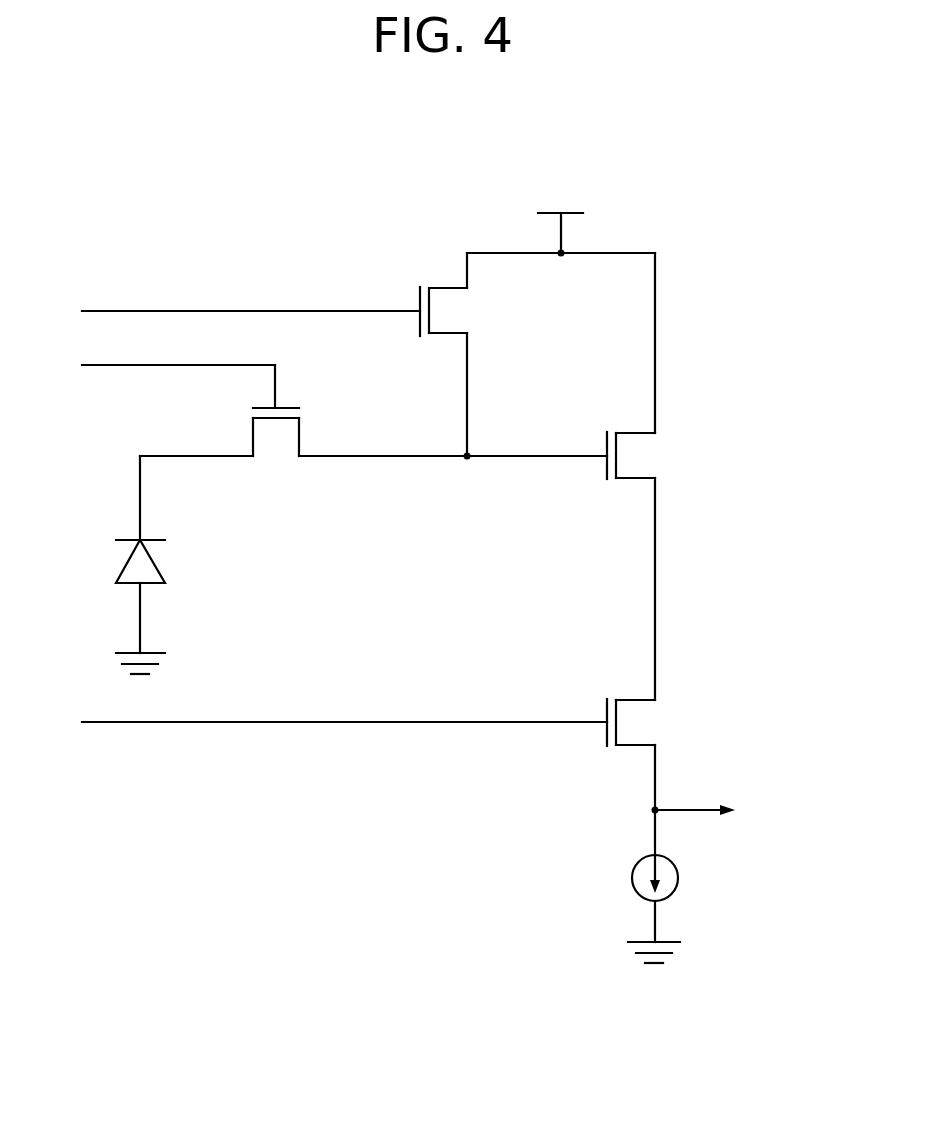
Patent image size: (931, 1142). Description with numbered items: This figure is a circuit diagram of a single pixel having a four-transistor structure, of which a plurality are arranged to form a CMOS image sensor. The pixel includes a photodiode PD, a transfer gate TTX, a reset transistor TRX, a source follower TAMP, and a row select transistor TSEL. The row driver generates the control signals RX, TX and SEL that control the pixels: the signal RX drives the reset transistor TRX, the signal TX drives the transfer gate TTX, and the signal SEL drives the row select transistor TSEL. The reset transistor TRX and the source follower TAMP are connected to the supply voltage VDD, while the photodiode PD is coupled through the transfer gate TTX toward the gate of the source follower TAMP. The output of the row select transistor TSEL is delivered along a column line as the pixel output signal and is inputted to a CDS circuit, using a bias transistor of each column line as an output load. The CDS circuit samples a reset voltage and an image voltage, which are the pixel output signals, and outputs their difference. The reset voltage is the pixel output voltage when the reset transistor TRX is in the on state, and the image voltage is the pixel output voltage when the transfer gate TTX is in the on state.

The supply voltage VDD is at (560, 220).
The control signal RX is at (234, 312).
The control signal TX is at (161, 380).
The reset transistor TRX is at (462, 354).
The transfer gate TTX is at (373, 446).
The photodiode PD is at (158, 565).
The source follower TAMP is at (658, 566).
The control signal SEL is at (322, 723).
The row select transistor TSEL is at (654, 777).